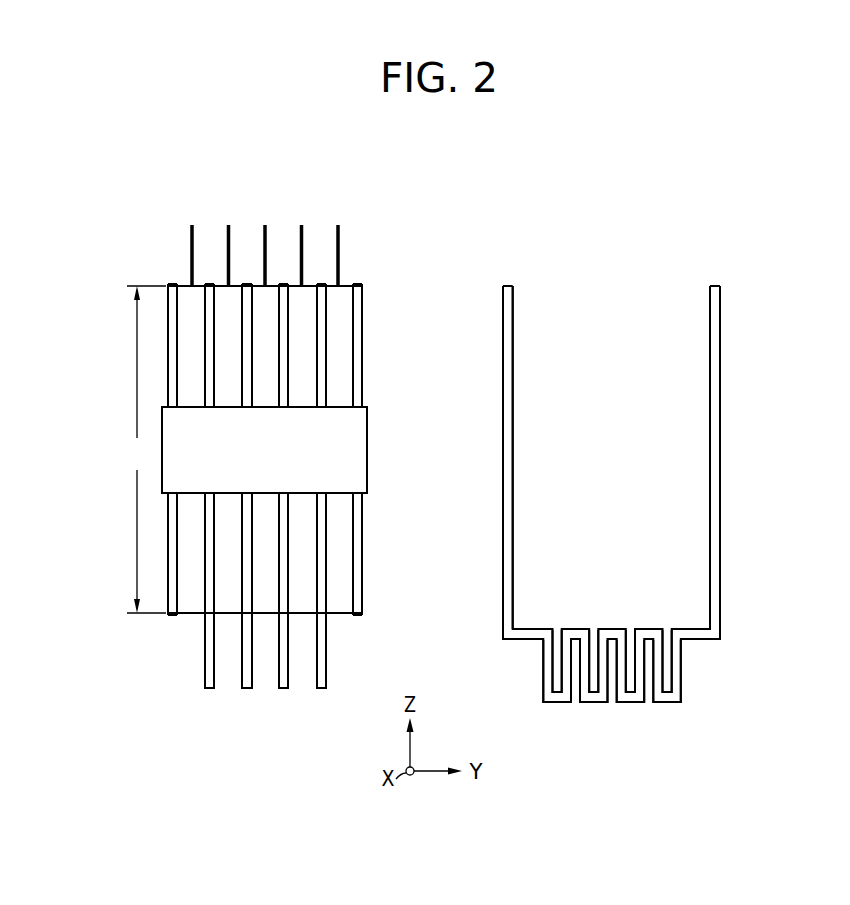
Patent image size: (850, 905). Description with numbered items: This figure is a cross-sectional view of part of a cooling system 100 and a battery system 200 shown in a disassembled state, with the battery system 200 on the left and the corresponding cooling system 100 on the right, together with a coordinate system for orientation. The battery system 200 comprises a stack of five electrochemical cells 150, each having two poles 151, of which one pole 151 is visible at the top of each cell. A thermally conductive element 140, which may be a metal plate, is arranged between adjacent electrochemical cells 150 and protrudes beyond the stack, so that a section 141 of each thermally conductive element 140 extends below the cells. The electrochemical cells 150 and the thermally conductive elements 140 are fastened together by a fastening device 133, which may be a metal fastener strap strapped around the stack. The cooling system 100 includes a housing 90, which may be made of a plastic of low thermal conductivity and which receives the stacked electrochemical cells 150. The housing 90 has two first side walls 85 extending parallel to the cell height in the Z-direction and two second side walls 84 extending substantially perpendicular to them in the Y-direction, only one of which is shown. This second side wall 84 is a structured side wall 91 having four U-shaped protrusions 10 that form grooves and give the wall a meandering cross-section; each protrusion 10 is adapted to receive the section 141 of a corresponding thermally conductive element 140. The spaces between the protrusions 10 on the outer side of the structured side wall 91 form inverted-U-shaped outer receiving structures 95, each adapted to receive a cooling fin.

The battery system 200 is at (285, 214).
The electrochemical cell 150 is at (298, 321).
The pole 151 is at (192, 238).
The fastening device 133 is at (279, 463).
The section 141 is at (334, 625).
The thermally conductive element 140 is at (320, 690).
The cooling system 100 is at (740, 316).
The housing 90 is at (508, 306).
The first side wall 85 is at (508, 478).
The second side wall 84 is at (684, 629).
The structured side wall 91 is at (685, 608).
The outer receiving structure 95 is at (575, 645).
The protrusion 10 is at (670, 703).